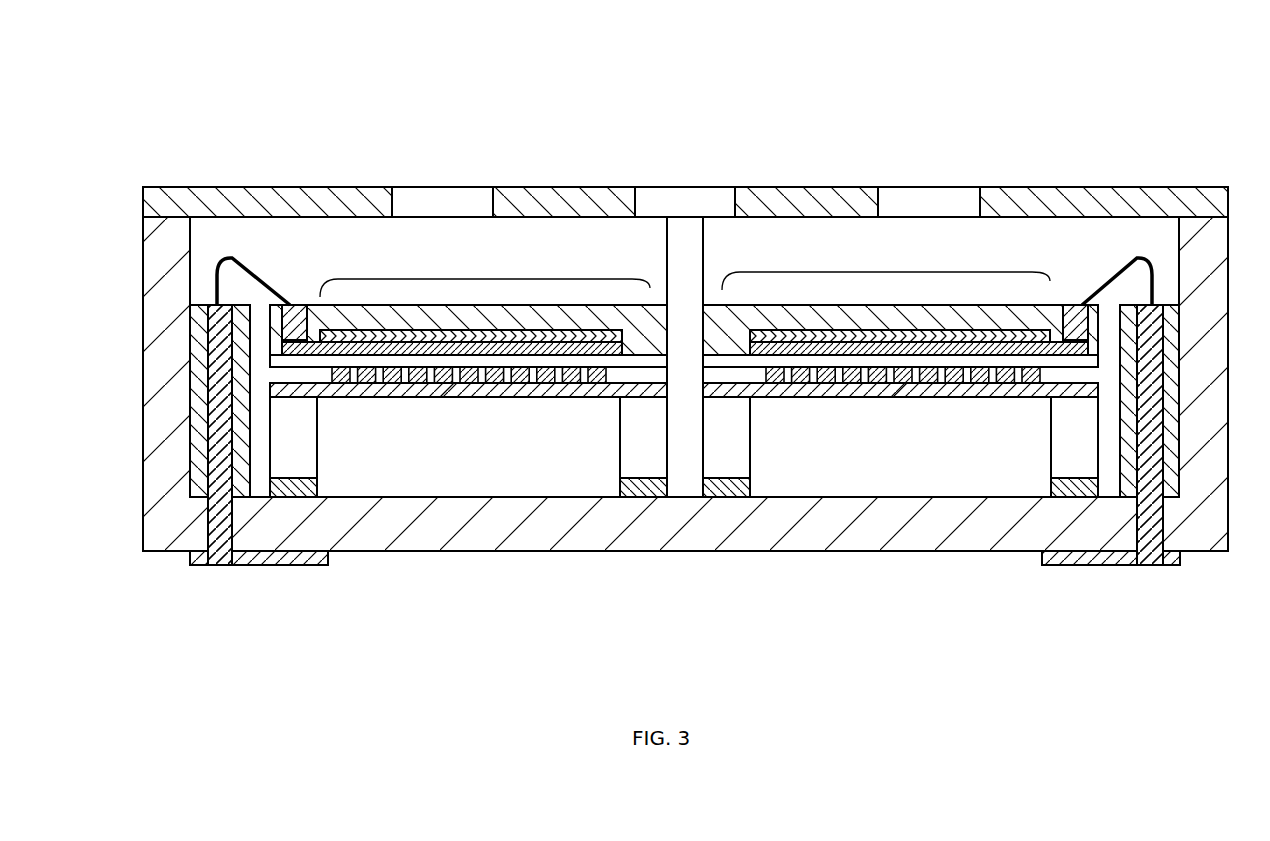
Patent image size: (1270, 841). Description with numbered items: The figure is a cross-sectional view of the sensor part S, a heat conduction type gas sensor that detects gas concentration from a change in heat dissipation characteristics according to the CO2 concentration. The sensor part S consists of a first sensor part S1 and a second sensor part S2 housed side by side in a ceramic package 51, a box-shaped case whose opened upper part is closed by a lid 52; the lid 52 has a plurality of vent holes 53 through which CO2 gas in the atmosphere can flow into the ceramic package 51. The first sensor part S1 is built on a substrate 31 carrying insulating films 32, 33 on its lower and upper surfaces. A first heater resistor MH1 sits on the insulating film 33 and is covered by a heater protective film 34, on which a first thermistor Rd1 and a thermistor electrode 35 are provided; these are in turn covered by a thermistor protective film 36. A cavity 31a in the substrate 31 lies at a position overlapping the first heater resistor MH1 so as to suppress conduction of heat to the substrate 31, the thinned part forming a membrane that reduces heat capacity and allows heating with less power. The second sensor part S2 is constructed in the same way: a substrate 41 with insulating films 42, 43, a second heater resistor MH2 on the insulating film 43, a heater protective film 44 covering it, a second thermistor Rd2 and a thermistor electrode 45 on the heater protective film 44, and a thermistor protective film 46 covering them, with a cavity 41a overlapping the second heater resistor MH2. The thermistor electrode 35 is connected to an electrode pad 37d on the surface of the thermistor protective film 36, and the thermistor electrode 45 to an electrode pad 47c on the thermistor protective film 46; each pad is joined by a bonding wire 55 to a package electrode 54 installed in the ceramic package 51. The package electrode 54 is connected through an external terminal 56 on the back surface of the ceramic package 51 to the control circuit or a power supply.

The sensor part S is at (1249, 53).
The ceramic package 51 is at (160, 349).
The lid 52 is at (792, 194).
The vent holes 53 is at (710, 194).
The heater protective film 44 is at (720, 370).
The substrate 31 is at (468, 509).
The cavity 31a is at (525, 437).
The first heater resistor MH1 is at (443, 387).
The insulating film 32 is at (290, 487).
The heater protective film 34 is at (657, 368).
The insulating film 33 is at (413, 386).
The thermistor electrode 35 is at (570, 362).
The thermistor protective film 36 is at (642, 322).
The first thermistor Rd1 is at (545, 332).
The electrode pad 37d is at (297, 308).
The first sensor part S1 is at (485, 268).
The substrate 41 is at (900, 507).
The cavity 41a is at (967, 468).
The second heater resistor MH2 is at (897, 386).
The insulating film 42 is at (732, 481).
The insulating film 43 is at (830, 386).
The thermistor electrode 45 is at (920, 346).
The thermistor protective film 46 is at (1012, 318).
The second thermistor Rd2 is at (968, 332).
The electrode pad 47c is at (1073, 310).
The second sensor part S2 is at (886, 262).
The package electrode 54 is at (218, 542).
The bonding wire 55 is at (233, 257).
The external terminal 56 is at (315, 560).